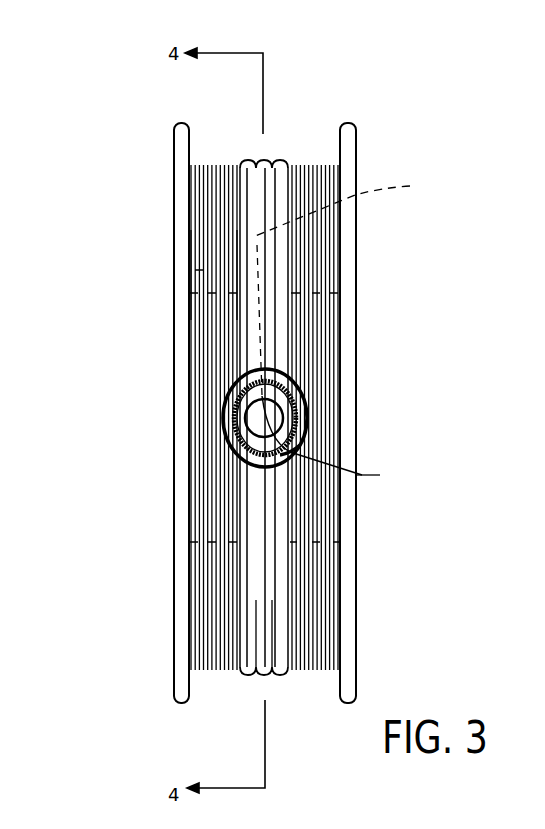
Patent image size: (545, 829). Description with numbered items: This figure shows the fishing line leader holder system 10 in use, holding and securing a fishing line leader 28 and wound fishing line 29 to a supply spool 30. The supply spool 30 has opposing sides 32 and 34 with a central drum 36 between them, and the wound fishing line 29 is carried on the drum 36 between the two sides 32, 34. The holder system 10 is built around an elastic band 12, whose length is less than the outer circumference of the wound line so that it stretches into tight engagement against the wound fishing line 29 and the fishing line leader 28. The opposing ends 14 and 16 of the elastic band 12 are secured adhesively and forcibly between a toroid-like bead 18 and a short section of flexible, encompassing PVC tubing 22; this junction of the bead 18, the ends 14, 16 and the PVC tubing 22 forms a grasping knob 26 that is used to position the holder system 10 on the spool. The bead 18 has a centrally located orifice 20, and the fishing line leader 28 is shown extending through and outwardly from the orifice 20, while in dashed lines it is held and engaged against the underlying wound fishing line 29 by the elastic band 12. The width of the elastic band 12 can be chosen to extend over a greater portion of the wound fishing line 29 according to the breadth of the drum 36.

The fishing line leader holder system 10 is at (283, 160).
The elastic band 12 is at (274, 670).
The opposing end 14 is at (295, 380).
The opposing end 16 is at (288, 458).
The toroid-like bead 18 is at (299, 396).
The orifice 20 is at (277, 418).
The PVC tubing 22 is at (299, 406).
The grasping knob 26 is at (158, 363).
The fishing line leader 28 is at (368, 475).
The wound fishing line 29 is at (228, 670).
The supply spool 30 is at (173, 175).
The opposing side 32 is at (172, 152).
The opposing side 34 is at (356, 152).
The central drum 36 is at (199, 270).